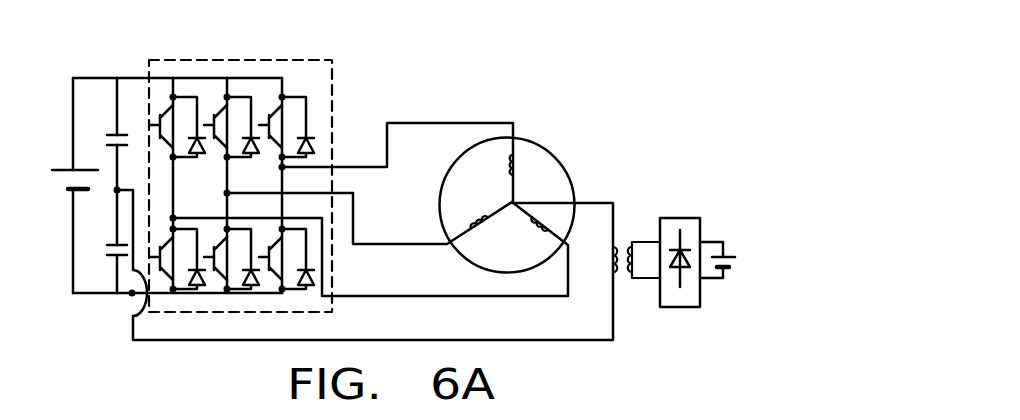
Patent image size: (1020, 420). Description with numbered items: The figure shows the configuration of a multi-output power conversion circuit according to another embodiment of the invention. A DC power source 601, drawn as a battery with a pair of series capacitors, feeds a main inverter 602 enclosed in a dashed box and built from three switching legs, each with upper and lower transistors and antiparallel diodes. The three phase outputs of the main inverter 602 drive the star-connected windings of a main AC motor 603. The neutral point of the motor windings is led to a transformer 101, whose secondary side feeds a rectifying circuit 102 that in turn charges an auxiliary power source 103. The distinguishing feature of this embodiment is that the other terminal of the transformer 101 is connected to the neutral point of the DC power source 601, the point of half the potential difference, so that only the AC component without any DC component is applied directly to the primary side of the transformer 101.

The DC power source 601 is at (60, 186).
The main inverter 602 is at (270, 60).
The main AC motor 603 is at (551, 158).
The transformer 101 is at (620, 240).
The rectifying circuit 102 is at (700, 229).
The auxiliary power source 103 is at (736, 262).